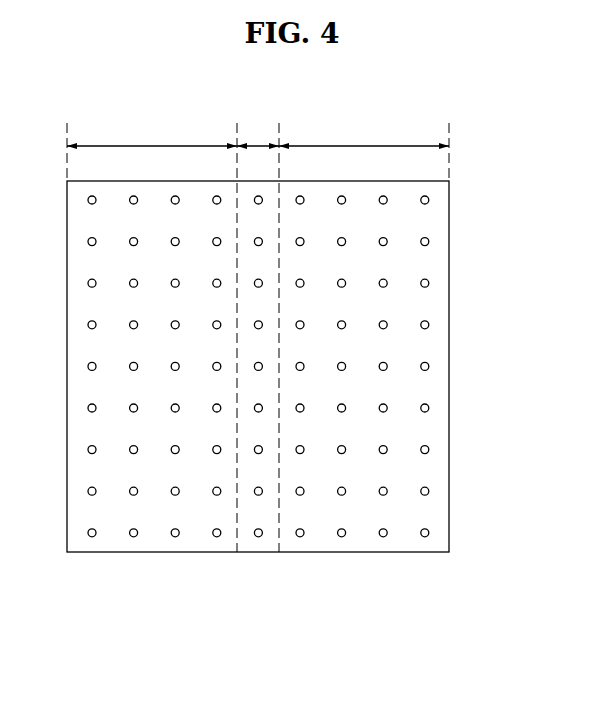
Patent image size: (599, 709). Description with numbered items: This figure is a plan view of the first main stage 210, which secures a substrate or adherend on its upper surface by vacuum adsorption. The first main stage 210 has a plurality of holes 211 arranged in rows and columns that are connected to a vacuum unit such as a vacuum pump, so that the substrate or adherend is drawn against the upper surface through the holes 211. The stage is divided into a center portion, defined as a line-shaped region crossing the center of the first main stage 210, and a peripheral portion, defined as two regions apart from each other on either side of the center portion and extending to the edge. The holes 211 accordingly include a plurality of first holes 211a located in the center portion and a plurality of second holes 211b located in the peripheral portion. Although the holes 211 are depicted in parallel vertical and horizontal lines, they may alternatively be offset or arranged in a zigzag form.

The first main stage 210 is at (449, 299).
The holes 211 is at (258, 432).
The first holes 211a is at (259, 537).
The second holes 211b is at (343, 537).